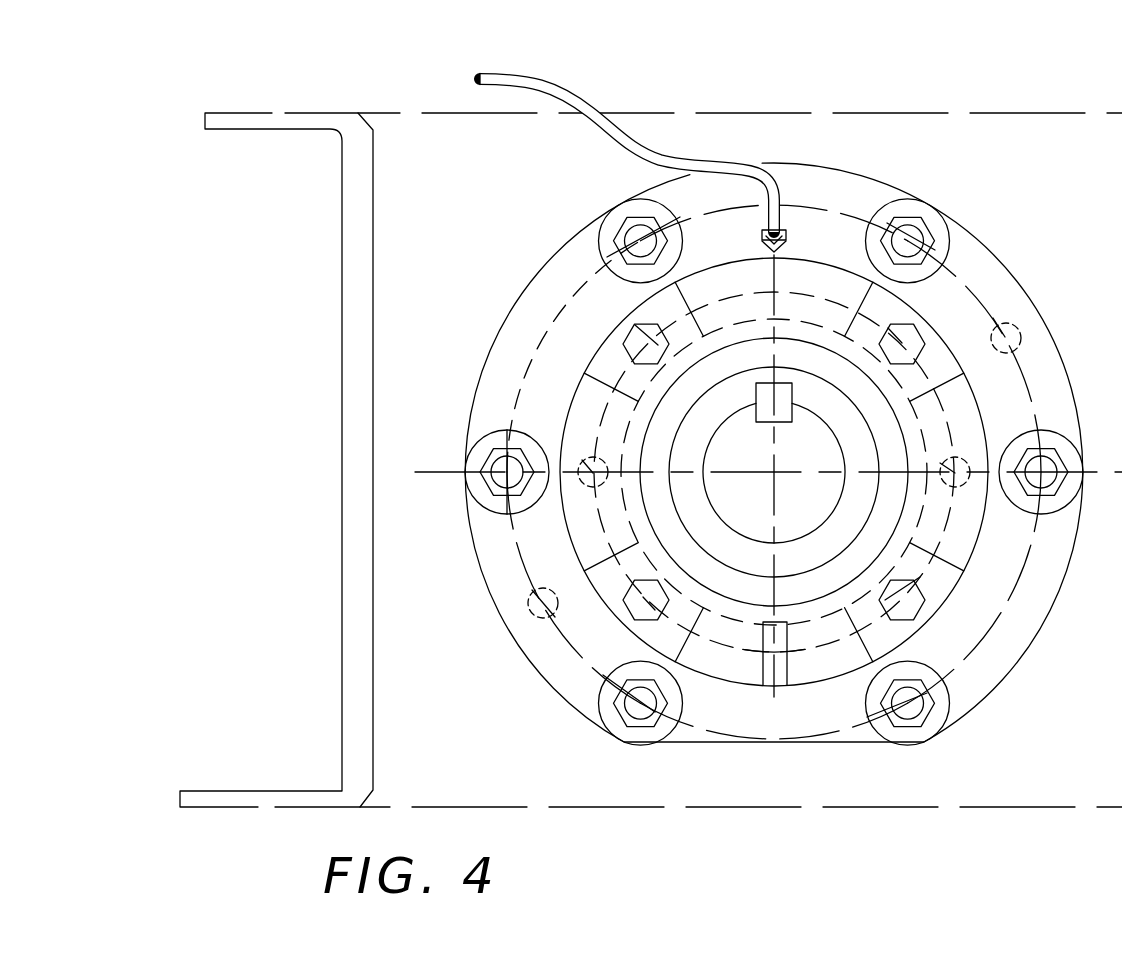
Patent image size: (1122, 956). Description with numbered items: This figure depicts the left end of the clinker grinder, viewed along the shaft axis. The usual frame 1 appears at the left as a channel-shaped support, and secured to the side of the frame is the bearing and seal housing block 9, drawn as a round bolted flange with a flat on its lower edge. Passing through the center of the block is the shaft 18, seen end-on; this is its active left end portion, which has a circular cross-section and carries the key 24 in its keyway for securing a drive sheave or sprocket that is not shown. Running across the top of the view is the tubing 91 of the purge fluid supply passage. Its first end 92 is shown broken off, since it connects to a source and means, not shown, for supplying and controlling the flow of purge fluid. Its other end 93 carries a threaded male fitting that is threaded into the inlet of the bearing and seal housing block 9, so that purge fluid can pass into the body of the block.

The frame 1 is at (270, 113).
The bearing and seal housing block 9 is at (821, 178).
The shaft 18 is at (755, 530).
The key 24 is at (783, 410).
The tubing 91 is at (586, 91).
The first end 92 is at (479, 79).
The other end 93 is at (797, 238).